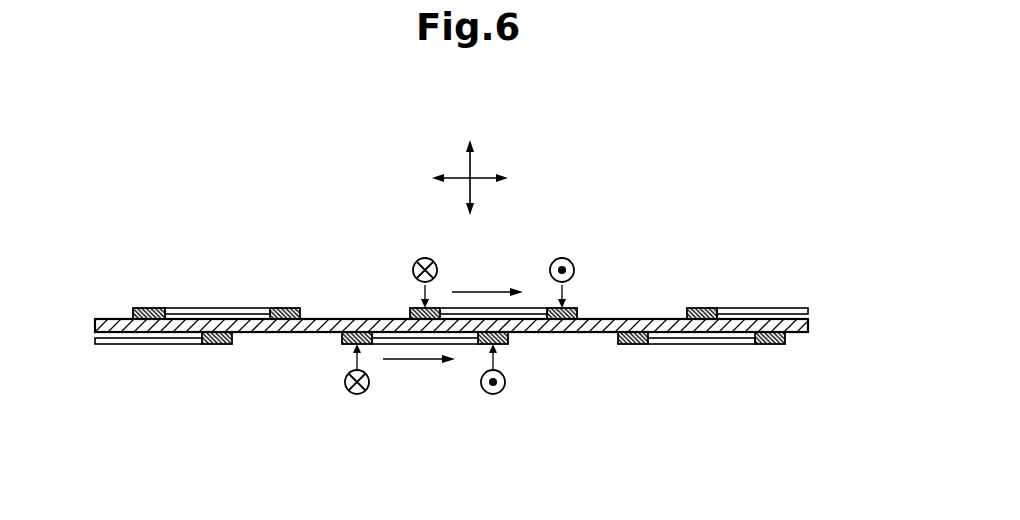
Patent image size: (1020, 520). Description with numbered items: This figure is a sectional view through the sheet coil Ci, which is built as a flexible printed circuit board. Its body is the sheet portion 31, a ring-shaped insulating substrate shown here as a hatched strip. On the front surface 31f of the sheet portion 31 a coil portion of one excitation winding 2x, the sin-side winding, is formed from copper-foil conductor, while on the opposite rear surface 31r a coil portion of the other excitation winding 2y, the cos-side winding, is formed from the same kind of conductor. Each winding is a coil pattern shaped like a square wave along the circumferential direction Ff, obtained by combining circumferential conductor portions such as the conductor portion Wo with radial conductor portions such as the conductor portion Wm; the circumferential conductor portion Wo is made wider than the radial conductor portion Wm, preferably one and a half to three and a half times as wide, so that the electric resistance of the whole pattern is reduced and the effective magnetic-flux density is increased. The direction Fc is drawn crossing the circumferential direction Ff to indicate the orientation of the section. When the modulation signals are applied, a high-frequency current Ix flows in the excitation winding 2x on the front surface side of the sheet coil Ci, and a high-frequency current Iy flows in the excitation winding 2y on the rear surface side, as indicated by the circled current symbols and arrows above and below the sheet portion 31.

The sheet portion 31 is at (446, 328).
The front surface 31f is at (358, 319).
The rear surface 31r is at (583, 333).
The circumferential conductor portion Wo is at (216, 266).
The radial conductor portion Wm is at (289, 308).
The sheet coil Ci is at (658, 214).
The current Ix is at (562, 258).
The current Iy is at (481, 377).
The circumferential direction Ff is at (458, 174).
The clamping force Fc is at (473, 165).
The excitation winding 2x is at (733, 270).
The excitation winding 2y is at (688, 371).